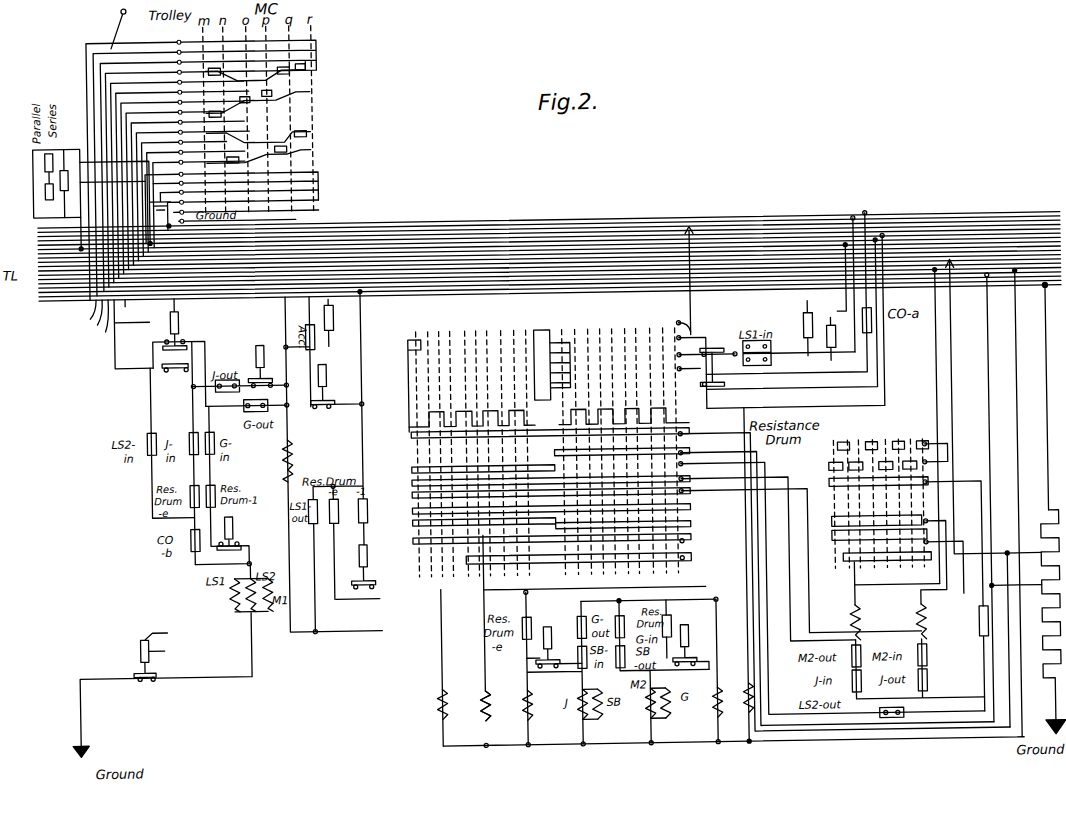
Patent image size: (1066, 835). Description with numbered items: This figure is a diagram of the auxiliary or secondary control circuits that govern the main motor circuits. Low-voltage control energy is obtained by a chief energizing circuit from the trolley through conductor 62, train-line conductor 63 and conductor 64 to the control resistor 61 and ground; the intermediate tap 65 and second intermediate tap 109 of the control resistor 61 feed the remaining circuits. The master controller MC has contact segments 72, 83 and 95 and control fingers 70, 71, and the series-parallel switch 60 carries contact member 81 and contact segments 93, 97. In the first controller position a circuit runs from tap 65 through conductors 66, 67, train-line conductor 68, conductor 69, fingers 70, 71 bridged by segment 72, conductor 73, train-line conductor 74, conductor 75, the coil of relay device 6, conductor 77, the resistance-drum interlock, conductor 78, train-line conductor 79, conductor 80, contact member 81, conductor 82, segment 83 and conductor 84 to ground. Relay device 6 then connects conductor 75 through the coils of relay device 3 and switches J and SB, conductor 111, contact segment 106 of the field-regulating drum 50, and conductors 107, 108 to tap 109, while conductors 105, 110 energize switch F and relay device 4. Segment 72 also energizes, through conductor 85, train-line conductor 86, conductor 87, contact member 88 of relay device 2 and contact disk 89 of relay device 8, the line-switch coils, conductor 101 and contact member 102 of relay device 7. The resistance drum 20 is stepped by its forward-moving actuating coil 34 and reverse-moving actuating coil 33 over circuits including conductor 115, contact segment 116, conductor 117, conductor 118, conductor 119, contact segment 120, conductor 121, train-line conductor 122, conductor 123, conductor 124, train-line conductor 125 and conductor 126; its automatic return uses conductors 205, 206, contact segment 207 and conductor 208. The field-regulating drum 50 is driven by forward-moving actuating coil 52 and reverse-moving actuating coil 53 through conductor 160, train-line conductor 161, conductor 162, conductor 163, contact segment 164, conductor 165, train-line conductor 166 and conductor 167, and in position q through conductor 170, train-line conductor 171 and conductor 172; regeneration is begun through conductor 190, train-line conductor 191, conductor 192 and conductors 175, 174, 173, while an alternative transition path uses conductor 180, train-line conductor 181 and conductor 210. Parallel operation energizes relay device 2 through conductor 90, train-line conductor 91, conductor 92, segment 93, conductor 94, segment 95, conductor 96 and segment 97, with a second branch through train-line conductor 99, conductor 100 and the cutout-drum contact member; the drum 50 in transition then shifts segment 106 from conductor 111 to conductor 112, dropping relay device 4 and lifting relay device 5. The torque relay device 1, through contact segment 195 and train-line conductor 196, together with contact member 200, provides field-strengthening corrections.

The torque relay device 1 is at (359, 322).
The relay device 2 is at (197, 326).
The relay device 3 is at (386, 576).
The relay device 4 is at (279, 354).
The relay device 5 is at (352, 400).
The relay device 6 is at (614, 646).
The relay device 7 is at (165, 692).
The relay device 8 is at (252, 525).
The resistance drum 20 is at (827, 516).
The reverse-moving actuating coil 33 is at (946, 621).
The forward-moving actuating coil 34 is at (880, 622).
The field-regulating drum 50 is at (400, 391).
The forward-moving actuating coil 52 is at (324, 464).
The reverse-moving actuating coil 53 is at (316, 459).
The series-parallel switch 60 is at (57, 74).
The control resistor 61 is at (1047, 518).
The conductor 62 is at (100, 30).
The train-line conductor 63 is at (79, 311).
The conductor 64 is at (1050, 322).
The intermediate tap 65 is at (1032, 599).
The conductor 66 is at (1015, 577).
The conductor 67 is at (990, 444).
The train-line conductor 68 is at (958, 288).
The conductor 69 is at (111, 28).
The control finger 70 is at (190, 47).
The control finger 71 is at (190, 58).
The contact segment 72 is at (323, 50).
The conductor 73 is at (100, 48).
The train-line conductor 74 is at (94, 317).
The conductor 75 is at (1018, 356).
The conductor 77 is at (751, 662).
The conductor 78 is at (787, 293).
The train-line conductor 79 is at (855, 222).
The conductor 80 is at (107, 229).
The contact member 81 is at (50, 170).
The conductor 82 is at (194, 191).
The contact segment 83 is at (323, 172).
The conductor 84 is at (194, 201).
The conductor 85 is at (133, 164).
The train-line conductor 86 is at (103, 323).
The conductor 87 is at (117, 362).
The contact member 88 is at (182, 453).
The contact disk 89 is at (194, 560).
The conductor 90 is at (134, 320).
The train-line conductor 91 is at (42, 220).
The conductor 92 is at (72, 204).
The contact segment 93 is at (54, 150).
The conductor 94 is at (50, 196).
The contact segment 95 is at (323, 194).
The conductor 96 is at (176, 205).
The contact segment 97 is at (50, 184).
The train-line conductor 99 is at (549, 221).
The conductor 100 is at (874, 316).
The conductor 101 is at (249, 665).
The contact member 102 is at (136, 676).
The conductor 105 is at (439, 648).
The contact segment 106 is at (548, 540).
The conductor 107 is at (801, 557).
The conductor 108 is at (765, 538).
The intermediate tap 109 is at (1021, 631).
The conductor 110 is at (482, 660).
The conductor 111 is at (635, 600).
The conductor 112 is at (732, 669).
The conductor 115 is at (950, 556).
The contact segment 116 is at (853, 576).
The conductor 117 is at (897, 580).
The conductor 118 is at (962, 704).
The conductor 119 is at (954, 566).
The contact segment 120 is at (926, 490).
The conductor 121 is at (938, 416).
The train-line conductor 122 is at (905, 273).
The conductor 123 is at (105, 62).
The conductor 124 is at (938, 452).
The train-line conductor 125 is at (889, 268).
The conductor 126 is at (110, 74).
The conductor 160 is at (115, 85).
The train-line conductor 161 is at (135, 313).
The conductor 162 is at (364, 324).
The conductor 163 is at (410, 440).
The contact segment 164 is at (560, 372).
The conductor 165 is at (791, 316).
The train-line conductor 166 is at (760, 248).
The conductor 167 is at (130, 117).
The conductor 170 is at (135, 127).
The train-line conductor 171 is at (376, 232).
The conductor 172 is at (700, 416).
The conductor 173 is at (196, 182).
The conductor 174 is at (413, 232).
The conductor 175 is at (699, 280).
The conductor 180 is at (195, 172).
The train-line conductor 181 is at (461, 232).
The conductor 190 is at (120, 96).
The train-line conductor 191 is at (125, 106).
The conductor 192 is at (288, 322).
The contact segment 195 is at (302, 375).
The train-line conductor 196 is at (318, 232).
The contact member 200 is at (806, 322).
The conductor 205 is at (837, 580).
The conductor 206 is at (833, 583).
The contact segment 207 is at (604, 463).
The conductor 208 is at (768, 555).
The conductor 210 is at (700, 370).